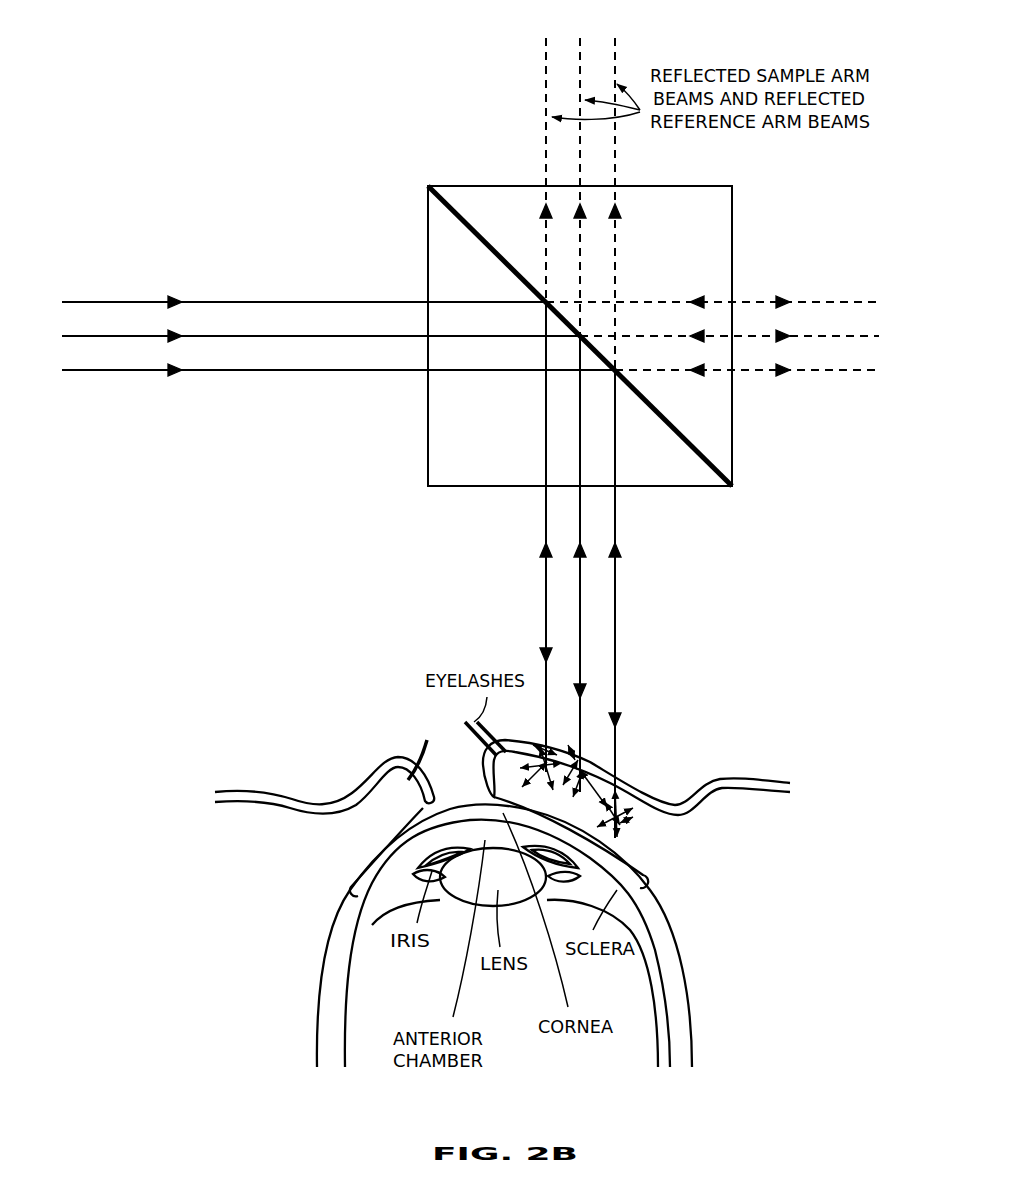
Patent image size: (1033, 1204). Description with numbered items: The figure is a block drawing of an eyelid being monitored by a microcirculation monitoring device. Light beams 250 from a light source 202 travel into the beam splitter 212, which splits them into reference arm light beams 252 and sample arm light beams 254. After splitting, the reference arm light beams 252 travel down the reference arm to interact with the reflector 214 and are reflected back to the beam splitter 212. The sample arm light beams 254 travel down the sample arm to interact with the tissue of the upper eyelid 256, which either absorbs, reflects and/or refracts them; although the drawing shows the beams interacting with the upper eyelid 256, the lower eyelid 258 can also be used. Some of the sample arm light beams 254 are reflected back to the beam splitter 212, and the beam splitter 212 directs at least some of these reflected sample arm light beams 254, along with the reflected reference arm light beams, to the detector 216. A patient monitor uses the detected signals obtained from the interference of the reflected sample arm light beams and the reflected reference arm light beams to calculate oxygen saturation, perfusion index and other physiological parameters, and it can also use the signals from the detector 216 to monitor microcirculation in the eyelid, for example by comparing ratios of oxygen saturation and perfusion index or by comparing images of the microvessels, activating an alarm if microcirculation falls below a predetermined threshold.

The light source 202 is at (64, 160).
The beam splitter 212 is at (428, 186).
The reflector 214 is at (866, 400).
The detector 216 is at (515, 38).
The light beams 250 is at (290, 368).
The reference arm light beams 252 is at (812, 366).
The sample arm light beams 254 is at (611, 505).
The upper eyelid 256 is at (650, 820).
The lower eyelid 258 is at (373, 793).